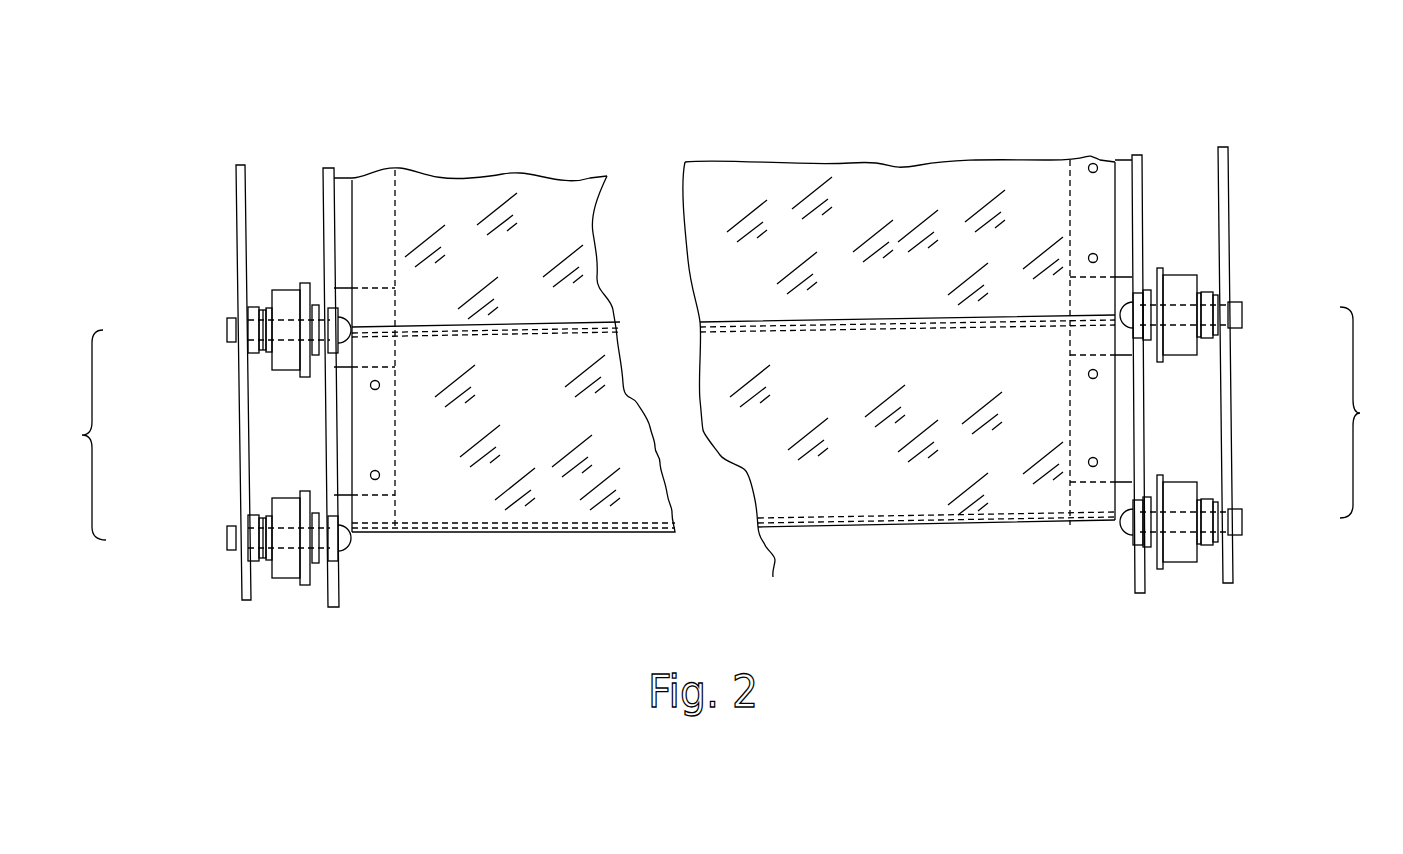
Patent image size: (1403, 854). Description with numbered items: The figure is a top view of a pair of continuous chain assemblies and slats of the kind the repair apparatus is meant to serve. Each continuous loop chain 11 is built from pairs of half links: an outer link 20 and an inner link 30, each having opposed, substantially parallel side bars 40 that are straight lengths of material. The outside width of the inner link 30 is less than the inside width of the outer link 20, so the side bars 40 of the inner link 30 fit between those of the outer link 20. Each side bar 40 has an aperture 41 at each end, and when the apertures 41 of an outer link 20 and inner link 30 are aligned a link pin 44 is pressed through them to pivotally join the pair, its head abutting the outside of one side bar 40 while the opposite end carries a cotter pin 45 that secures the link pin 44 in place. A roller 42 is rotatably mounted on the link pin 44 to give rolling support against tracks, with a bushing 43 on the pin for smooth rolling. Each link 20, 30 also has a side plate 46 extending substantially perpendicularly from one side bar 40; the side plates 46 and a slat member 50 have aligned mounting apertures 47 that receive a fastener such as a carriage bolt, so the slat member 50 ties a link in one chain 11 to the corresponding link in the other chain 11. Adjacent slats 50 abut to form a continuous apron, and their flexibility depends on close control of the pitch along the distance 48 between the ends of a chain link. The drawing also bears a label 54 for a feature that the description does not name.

The continuous loop chain 11 is at (165, 333).
The outer link 20 is at (236, 255).
The inner link 30 is at (250, 445).
The side bar 40 is at (737, 345).
The aperture 41 is at (222, 362).
The roller 42 is at (295, 300).
The bushing 43 is at (262, 310).
The link pin 44 is at (280, 332).
The cotter pin 45 is at (1237, 327).
The side plate 46 is at (343, 443).
The mounting aperture 47 is at (383, 477).
The distance between the ends of a chain link 48 is at (724, 453).
The slat member 50 is at (797, 177).
The bolt head 54 is at (232, 316).